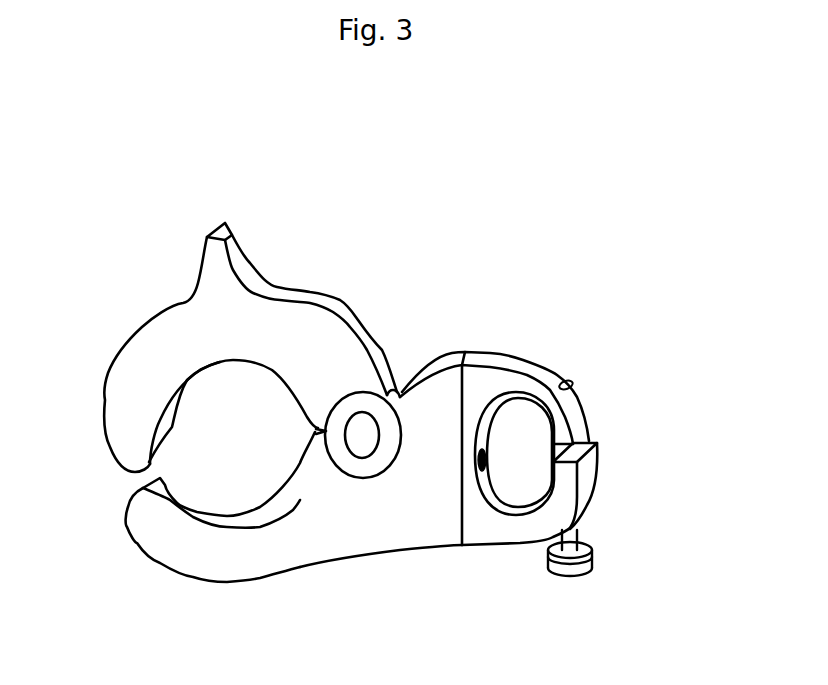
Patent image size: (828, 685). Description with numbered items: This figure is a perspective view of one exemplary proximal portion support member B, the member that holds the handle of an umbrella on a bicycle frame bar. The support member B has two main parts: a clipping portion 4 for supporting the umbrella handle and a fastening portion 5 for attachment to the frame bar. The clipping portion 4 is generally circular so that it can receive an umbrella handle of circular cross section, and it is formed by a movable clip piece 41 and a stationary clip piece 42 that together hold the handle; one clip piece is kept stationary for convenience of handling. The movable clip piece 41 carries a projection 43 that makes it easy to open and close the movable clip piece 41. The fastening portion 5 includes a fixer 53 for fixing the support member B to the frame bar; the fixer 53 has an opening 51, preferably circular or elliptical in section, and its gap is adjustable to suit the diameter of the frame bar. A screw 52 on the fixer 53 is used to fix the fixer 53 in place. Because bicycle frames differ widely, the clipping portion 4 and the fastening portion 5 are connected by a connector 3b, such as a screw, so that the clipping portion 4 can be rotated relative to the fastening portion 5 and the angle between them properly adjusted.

The connector 3b is at (487, 463).
The clipping portion 4 is at (458, 590).
The movable clip piece 41 is at (148, 337).
The stationary clip piece 42 is at (150, 538).
The projection 43 is at (220, 257).
The fastening portion 5 is at (593, 593).
The opening 51 is at (528, 492).
The screw 52 is at (597, 565).
The fixer 53 is at (590, 455).
The proximal portion support member B is at (420, 322).